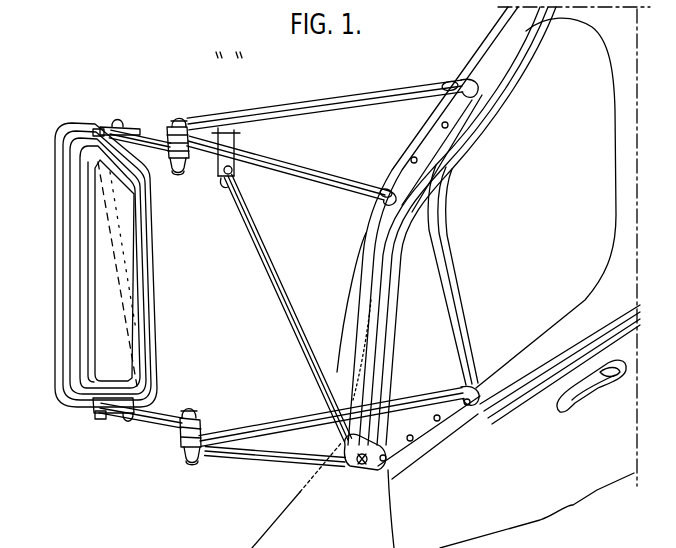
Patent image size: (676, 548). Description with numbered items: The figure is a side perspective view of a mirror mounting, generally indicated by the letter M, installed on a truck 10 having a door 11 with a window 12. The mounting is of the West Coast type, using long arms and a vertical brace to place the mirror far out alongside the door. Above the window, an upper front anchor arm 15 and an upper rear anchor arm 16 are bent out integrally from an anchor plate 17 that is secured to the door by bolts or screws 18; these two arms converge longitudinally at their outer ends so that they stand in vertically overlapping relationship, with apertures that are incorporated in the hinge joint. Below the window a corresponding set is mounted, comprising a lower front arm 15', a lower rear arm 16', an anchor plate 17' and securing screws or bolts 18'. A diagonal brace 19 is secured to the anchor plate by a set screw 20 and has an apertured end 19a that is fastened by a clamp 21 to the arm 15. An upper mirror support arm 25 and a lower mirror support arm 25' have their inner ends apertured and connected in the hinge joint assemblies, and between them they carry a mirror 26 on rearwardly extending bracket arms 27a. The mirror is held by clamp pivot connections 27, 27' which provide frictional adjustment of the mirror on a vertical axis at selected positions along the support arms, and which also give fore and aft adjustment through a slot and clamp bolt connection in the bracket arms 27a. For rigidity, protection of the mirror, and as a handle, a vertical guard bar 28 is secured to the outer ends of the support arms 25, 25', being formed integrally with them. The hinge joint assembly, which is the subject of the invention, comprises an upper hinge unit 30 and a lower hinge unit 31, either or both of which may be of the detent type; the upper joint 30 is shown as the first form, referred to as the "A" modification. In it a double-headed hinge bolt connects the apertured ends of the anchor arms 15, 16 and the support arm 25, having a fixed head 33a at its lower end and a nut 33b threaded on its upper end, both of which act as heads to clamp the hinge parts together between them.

The truck 10 is at (287, 513).
The door 11 is at (620, 343).
The window 12 is at (607, 222).
The upper front anchor arm 15 is at (291, 170).
The upper rear anchor arm 16 is at (332, 100).
The anchor plate 17 is at (432, 153).
The bolts or screws 18 is at (402, 146).
The diagonal brace 19 is at (272, 290).
The apertured end 19a is at (224, 181).
The set screw 20 is at (367, 472).
The clamp 21 is at (237, 150).
The upper mirror support arm 25 is at (140, 125).
The lower mirror support arm 25' is at (151, 402).
The mirror 26 is at (155, 285).
The clamp pivot connection 27 is at (120, 108).
The clamp pivot connection 27' is at (128, 426).
The bracket arms 27a is at (98, 128).
The vertical guard bar 28 is at (56, 273).
The upper hinge unit 30 is at (183, 126).
The lower hinge unit 31 is at (180, 443).
The head 33a is at (176, 176).
The nut 33b is at (180, 115).
The lower front arm 15' is at (275, 467).
The lower rear arm 16' is at (339, 415).
The anchor plate 17' is at (429, 448).
The securing screws or bolts 18' is at (439, 430).
The "A" modification A is at (206, 118).
The mirror mounting M is at (279, 107).